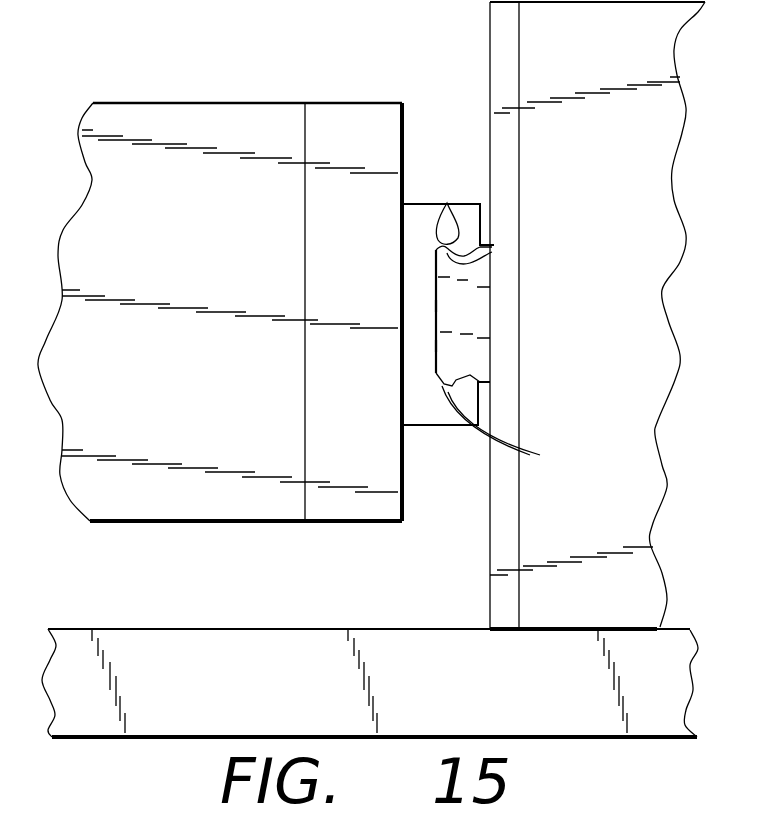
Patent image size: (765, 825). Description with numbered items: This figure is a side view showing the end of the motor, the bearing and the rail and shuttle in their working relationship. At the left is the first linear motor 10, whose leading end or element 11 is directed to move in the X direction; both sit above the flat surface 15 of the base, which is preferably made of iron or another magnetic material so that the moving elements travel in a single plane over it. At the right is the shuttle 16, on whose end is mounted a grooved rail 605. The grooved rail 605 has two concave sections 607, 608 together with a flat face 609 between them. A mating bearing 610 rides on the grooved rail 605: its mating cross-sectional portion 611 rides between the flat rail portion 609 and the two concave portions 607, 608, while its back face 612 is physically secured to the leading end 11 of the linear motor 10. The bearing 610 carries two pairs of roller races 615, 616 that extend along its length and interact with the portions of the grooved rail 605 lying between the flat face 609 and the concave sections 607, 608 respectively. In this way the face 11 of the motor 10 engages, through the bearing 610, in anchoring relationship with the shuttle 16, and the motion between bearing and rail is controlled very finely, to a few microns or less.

The first linear motor 10 is at (245, 103).
The element 11 is at (360, 103).
The flat surface 15 is at (262, 629).
The shuttle 16 is at (380, 284).
The grooved rail 605 is at (483, 305).
The concave section 607 is at (487, 255).
The concave section 608 is at (462, 372).
The flat face 609 is at (436, 345).
The mating bearing 610 is at (437, 418).
The mating cross-sectional portion 611 is at (436, 305).
The back face 612 is at (402, 397).
The roller race 615 is at (447, 204).
The roller race 616 is at (514, 427).